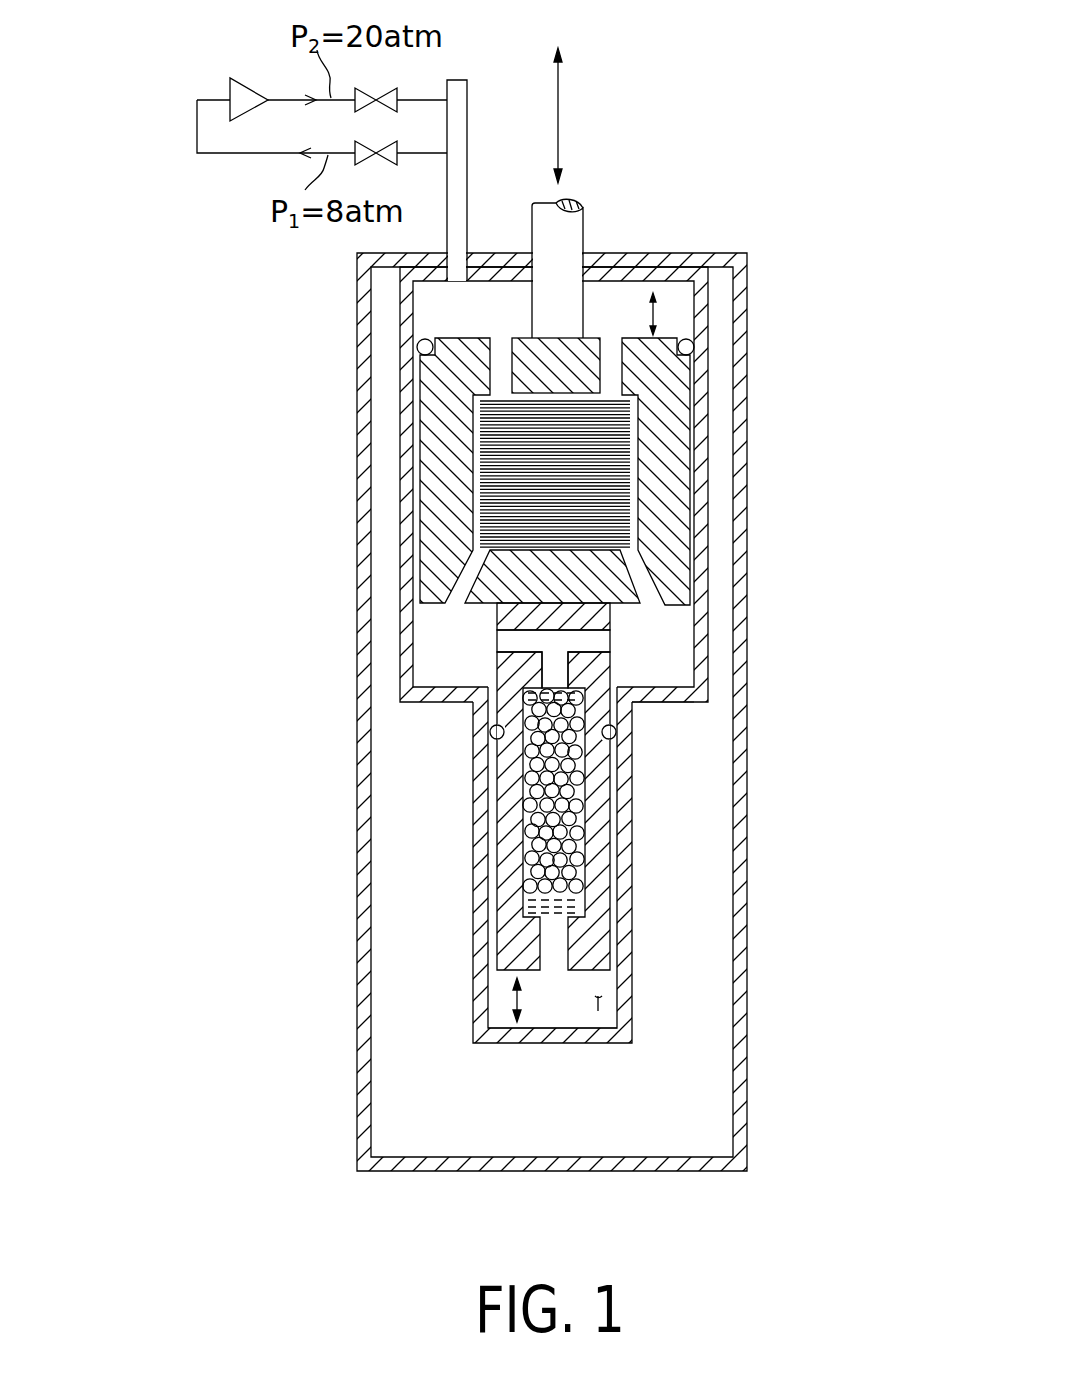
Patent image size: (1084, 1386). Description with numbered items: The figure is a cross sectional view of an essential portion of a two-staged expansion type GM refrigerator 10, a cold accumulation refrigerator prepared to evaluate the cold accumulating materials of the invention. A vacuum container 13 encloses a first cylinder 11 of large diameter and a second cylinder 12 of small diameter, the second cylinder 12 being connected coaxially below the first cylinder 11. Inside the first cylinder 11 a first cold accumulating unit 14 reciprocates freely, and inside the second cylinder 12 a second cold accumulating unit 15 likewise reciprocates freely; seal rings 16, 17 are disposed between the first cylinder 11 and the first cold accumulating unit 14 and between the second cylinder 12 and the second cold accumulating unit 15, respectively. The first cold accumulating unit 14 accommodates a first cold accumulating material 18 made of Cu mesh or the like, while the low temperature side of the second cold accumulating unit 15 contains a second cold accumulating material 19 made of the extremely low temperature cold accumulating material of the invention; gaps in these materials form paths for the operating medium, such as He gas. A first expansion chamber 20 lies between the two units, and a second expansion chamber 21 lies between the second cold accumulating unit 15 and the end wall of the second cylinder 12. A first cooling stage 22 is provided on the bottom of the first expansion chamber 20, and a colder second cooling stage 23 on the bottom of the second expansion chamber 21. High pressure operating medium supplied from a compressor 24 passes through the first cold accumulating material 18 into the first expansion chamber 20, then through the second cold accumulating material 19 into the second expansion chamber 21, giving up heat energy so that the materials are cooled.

The two-staged expansion type GM refrigerator 10 is at (778, 240).
The first cylinder 11 is at (400, 456).
The second cylinder 12 is at (485, 797).
The vacuum container 13 is at (357, 952).
The first cold accumulating unit 14 is at (677, 511).
The second cold accumulating unit 15 is at (603, 947).
The seal ring 16 is at (695, 351).
The seal ring 17 is at (612, 733).
The first cold accumulating material 18 is at (634, 452).
The second cold accumulating material 19 is at (583, 833).
The first expansion chamber 20 is at (672, 648).
The second expansion chamber 21 is at (600, 1003).
The first cooling stage 22 is at (690, 720).
The second cooling stage 23 is at (612, 1045).
The compressor 24 is at (244, 80).